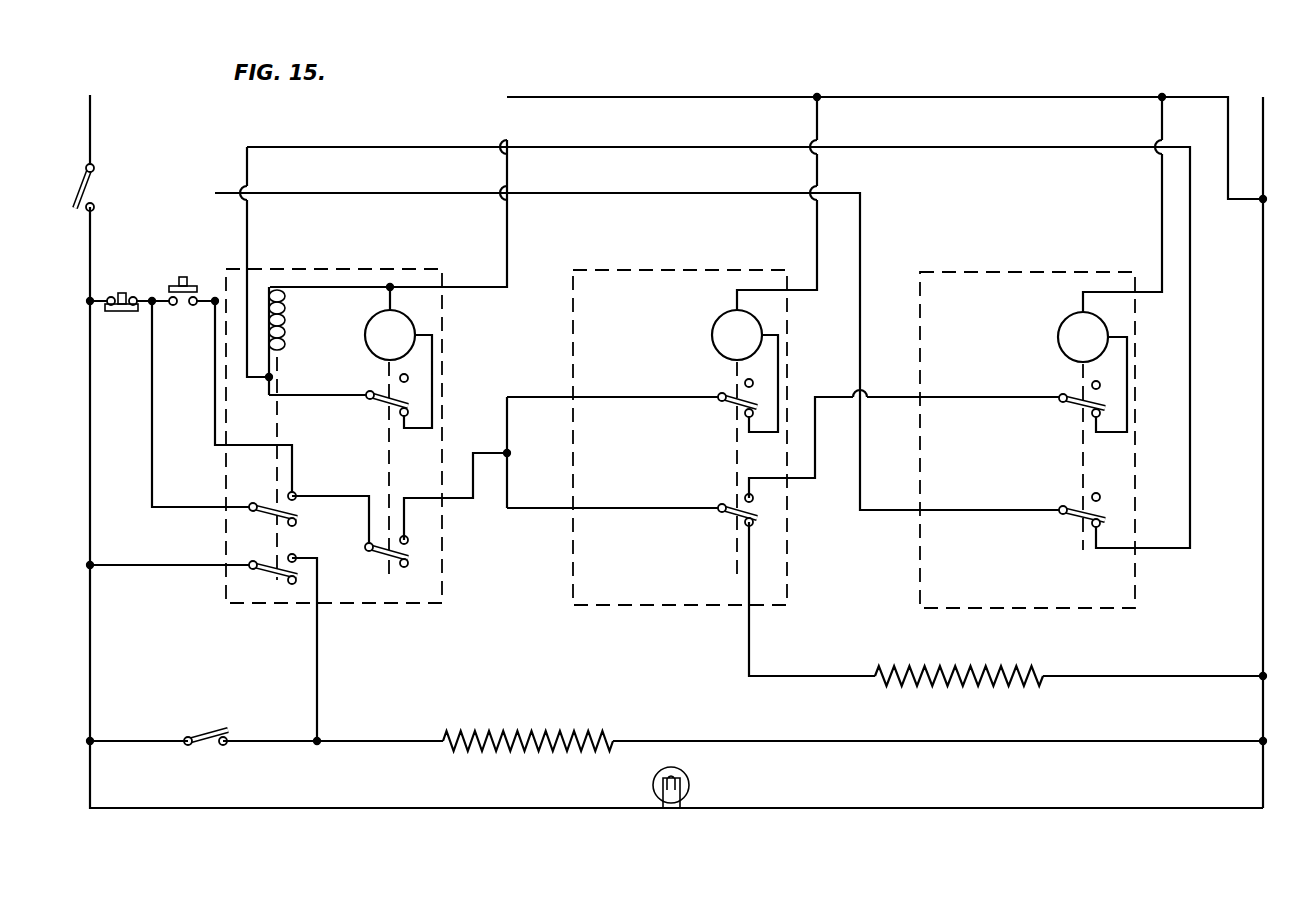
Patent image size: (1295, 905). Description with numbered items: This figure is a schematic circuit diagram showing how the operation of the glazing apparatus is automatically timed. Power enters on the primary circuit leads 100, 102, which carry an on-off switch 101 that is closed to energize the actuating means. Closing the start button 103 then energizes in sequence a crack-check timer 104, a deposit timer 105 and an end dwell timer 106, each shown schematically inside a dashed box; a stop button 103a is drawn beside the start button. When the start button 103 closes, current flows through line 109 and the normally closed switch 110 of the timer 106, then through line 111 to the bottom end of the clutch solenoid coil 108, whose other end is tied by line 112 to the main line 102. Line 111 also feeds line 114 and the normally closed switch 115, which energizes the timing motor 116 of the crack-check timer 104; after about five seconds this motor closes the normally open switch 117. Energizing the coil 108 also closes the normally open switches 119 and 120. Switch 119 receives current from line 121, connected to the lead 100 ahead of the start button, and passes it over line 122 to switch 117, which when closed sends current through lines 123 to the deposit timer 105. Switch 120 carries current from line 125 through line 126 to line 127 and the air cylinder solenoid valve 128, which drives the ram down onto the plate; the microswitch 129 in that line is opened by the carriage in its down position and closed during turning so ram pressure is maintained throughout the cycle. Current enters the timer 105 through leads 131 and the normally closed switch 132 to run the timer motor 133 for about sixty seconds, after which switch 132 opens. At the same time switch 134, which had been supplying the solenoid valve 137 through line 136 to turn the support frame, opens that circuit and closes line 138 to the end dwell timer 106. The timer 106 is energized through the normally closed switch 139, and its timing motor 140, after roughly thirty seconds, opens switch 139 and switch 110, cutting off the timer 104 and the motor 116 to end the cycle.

The primary circuit lead 100 is at (90, 112).
The on-off switch 101 is at (94, 186).
The primary circuit lead 102 is at (1263, 100).
The start button 103 is at (180, 276).
The stop push button 103a is at (128, 293).
The crack-check timer 104 is at (320, 269).
The deposit timer 105 is at (660, 270).
The end dwell timer 106 is at (1012, 272).
The clutch solenoid coil 108 is at (285, 336).
The line 109 is at (213, 211).
The normally closed switch 110 is at (1072, 517).
The line 111 is at (352, 147).
The line 112 is at (507, 230).
The line 114 is at (300, 395).
The normally closed switch 115 is at (396, 402).
The timing motor 116 is at (395, 335).
The normally open switch 117 is at (375, 562).
The normally open switch 119 is at (268, 500).
The normally open switch 120 is at (270, 560).
The line 121 is at (152, 375).
The line 122 is at (333, 492).
The lines 123 is at (455, 500).
The line 125 is at (125, 565).
The line 126 is at (317, 677).
The line 127 is at (350, 745).
The air cylinder solenoid valve 128 is at (540, 733).
The microswitch 129 is at (210, 730).
The leads 131 is at (507, 428).
The normally closed switch 132 is at (730, 405).
The timer motor 133 is at (728, 335).
The switch 134 is at (731, 517).
The line 136 is at (749, 638).
The solenoid valve 137 is at (968, 686).
The line 138 is at (818, 462).
The normally closed switch 139 is at (1072, 405).
The timing motor 140 is at (1058, 337).